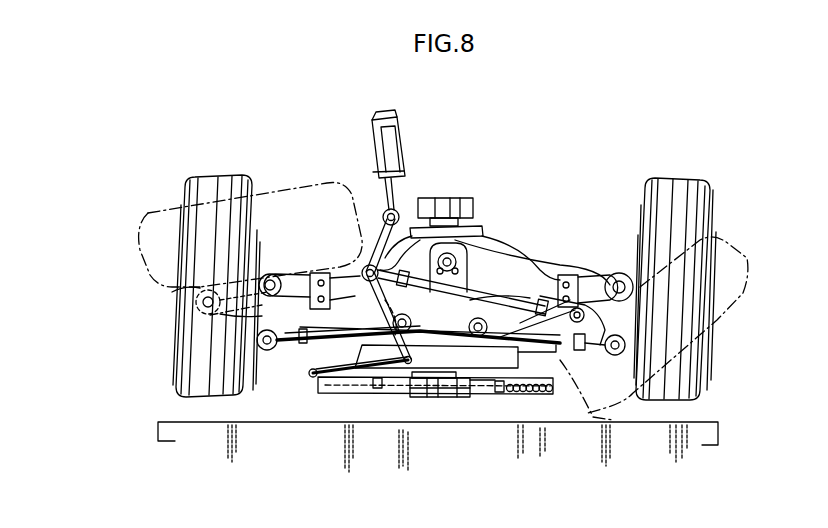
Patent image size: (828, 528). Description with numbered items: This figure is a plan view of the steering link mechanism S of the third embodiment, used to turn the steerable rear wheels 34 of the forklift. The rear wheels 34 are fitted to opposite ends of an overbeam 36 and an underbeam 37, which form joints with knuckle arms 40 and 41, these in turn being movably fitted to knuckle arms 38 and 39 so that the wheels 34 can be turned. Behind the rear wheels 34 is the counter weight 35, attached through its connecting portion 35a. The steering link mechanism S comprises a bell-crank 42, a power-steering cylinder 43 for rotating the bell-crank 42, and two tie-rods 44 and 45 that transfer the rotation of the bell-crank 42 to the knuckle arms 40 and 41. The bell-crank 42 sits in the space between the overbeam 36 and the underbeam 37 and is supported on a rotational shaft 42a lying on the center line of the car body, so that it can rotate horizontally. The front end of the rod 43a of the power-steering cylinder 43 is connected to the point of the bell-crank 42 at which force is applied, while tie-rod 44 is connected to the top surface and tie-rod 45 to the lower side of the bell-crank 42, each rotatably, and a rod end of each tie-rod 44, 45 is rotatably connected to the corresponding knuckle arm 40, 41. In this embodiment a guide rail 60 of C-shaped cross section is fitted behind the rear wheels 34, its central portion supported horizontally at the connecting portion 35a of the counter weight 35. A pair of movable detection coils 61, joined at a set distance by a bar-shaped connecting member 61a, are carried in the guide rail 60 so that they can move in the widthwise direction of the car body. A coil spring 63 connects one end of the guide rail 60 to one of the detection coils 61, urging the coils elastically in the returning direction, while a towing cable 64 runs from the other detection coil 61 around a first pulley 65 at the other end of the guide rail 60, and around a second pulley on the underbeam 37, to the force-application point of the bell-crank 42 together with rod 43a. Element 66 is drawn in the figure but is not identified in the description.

The rear wheels 34 is at (215, 183).
The counter weight 35 is at (720, 435).
The connecting portion 35a is at (455, 393).
The overbeam 36 is at (343, 285).
The underbeam 37 is at (512, 273).
The knuckle arm 38 is at (271, 273).
The knuckle arm 39 is at (623, 262).
The knuckle arm 40 is at (177, 308).
The knuckle arm 41 is at (620, 363).
The bell-crank 42 is at (393, 210).
The rotational shaft 42a is at (478, 250).
The power-steering cylinder 43 is at (375, 137).
The rod 43a is at (377, 205).
The tie-rod 44 is at (313, 347).
The tie-rod 45 is at (533, 287).
The guide rail 60 is at (353, 383).
The detection coils 61 is at (377, 392).
The connecting member 61a is at (413, 393).
The coil spring 63 is at (480, 395).
The towing cable 64 is at (355, 363).
The first pulley 65 is at (313, 377).
The valve body 66 is at (438, 393).
The steering link mechanism S is at (482, 265).